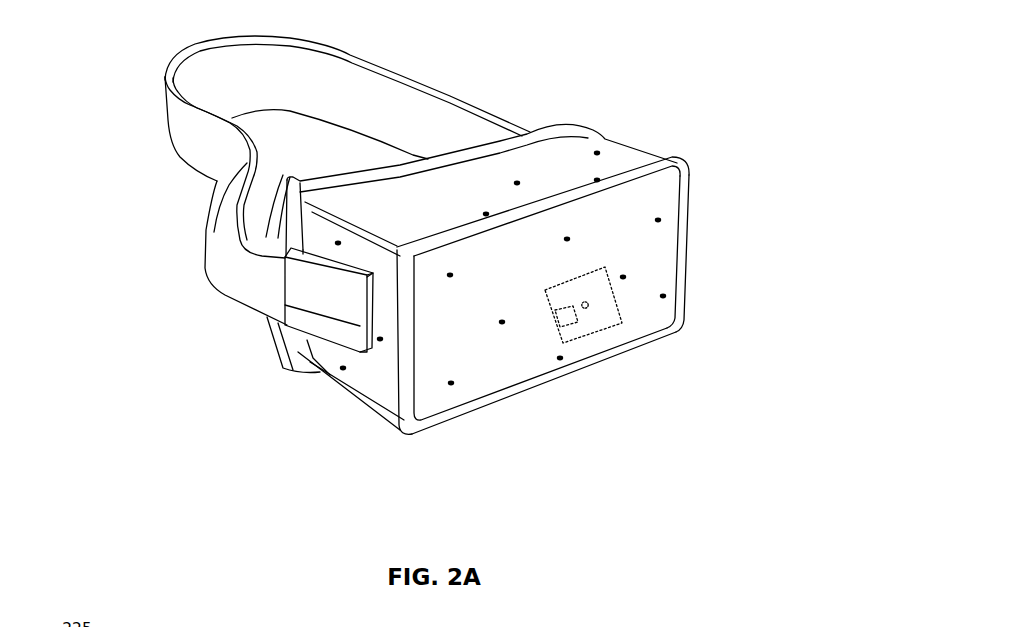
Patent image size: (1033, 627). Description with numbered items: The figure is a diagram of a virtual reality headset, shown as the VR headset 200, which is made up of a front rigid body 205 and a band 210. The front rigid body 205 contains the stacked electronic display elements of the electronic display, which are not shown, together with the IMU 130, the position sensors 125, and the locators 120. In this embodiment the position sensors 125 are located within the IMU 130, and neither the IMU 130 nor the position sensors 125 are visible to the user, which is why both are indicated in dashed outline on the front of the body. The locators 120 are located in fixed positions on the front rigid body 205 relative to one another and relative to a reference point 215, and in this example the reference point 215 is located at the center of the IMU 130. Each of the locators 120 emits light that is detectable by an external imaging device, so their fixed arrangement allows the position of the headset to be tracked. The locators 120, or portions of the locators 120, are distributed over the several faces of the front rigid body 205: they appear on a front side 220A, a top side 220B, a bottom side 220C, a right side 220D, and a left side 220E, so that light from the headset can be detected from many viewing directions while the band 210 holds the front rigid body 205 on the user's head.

The VR headset 200 is at (462, 274).
The front rigid body 205 is at (685, 164).
The band 210 is at (433, 97).
The front side 220A is at (441, 400).
The top side 220B is at (362, 205).
The bottom side 220C is at (340, 400).
The right side 220D is at (375, 371).
The left side 220E is at (660, 157).
The locators 120 is at (663, 294).
The position sensors 125 is at (560, 327).
The IMU 130 is at (621, 320).
The reference point 215 is at (585, 312).